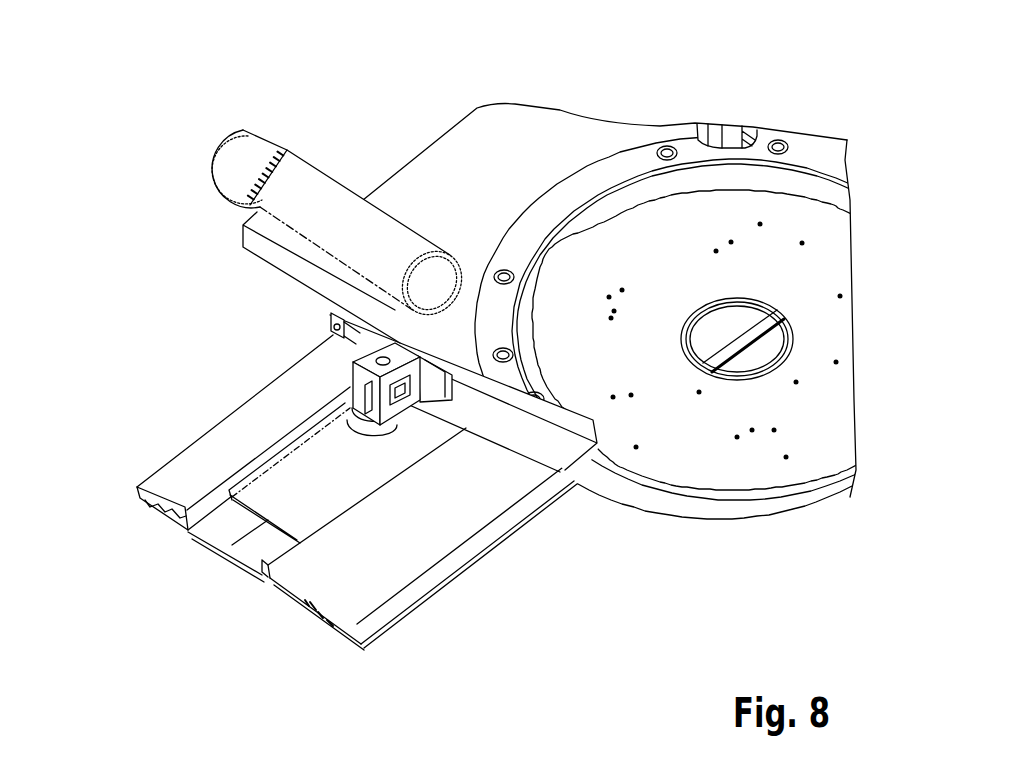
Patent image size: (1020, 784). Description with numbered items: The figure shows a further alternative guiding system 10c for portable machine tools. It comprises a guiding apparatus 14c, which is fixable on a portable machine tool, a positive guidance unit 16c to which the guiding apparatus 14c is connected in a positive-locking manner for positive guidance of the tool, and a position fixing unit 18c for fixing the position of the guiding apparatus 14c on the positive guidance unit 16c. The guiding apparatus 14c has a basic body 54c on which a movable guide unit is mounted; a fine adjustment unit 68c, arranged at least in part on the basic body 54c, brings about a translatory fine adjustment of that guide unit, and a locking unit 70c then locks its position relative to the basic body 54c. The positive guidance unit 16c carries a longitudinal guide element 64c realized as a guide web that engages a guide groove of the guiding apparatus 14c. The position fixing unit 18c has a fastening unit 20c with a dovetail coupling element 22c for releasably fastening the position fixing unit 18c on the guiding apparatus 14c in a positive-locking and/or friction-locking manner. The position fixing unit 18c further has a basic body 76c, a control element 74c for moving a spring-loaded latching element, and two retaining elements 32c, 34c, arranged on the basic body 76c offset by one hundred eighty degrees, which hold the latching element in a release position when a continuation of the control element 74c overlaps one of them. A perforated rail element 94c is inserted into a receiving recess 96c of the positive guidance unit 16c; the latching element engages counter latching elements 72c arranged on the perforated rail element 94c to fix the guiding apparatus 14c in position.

The guiding system 10c is at (145, 124).
The guiding apparatus 14c is at (690, 92).
The positive guidance unit 16c is at (298, 646).
The position fixing unit 18c is at (312, 382).
The fastening unit 20c is at (302, 312).
The coupling element 22c is at (353, 331).
The retaining element 32c is at (398, 423).
The retaining element 34c is at (437, 390).
The basic body 54c is at (574, 128).
The longitudinal guide element 64c is at (208, 506).
The fine adjustment unit 68c is at (284, 118).
The locking unit 70c is at (756, 98).
The counter latching element 72c is at (232, 545).
The control element 74c is at (385, 402).
The basic body 76c is at (372, 437).
The perforated rail element 94c is at (230, 497).
The receiving recess 96c is at (268, 558).